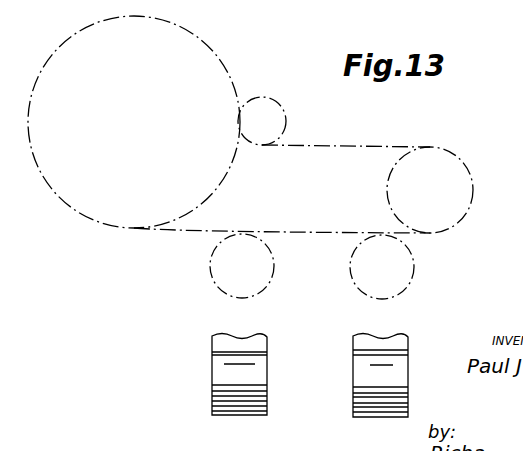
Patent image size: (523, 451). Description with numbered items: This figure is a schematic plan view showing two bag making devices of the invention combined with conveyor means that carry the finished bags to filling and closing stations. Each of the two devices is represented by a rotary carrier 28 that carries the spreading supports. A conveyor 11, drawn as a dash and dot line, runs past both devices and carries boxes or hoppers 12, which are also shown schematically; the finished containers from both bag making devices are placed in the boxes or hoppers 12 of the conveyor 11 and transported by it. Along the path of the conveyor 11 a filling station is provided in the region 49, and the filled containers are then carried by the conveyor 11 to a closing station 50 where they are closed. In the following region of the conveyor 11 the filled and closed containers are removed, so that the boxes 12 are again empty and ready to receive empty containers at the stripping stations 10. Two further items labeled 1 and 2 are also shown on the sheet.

The region 49 is at (216, 51).
The closing station 50 is at (427, 153).
The boxes or hoppers 12 is at (282, 212).
The conveyor 11 is at (300, 236).
The stripping station 10 is at (312, 254).
The rotary carrier 28 is at (255, 277).
The web sample 1 is at (322, 365).
The web layer 2 is at (262, 378).